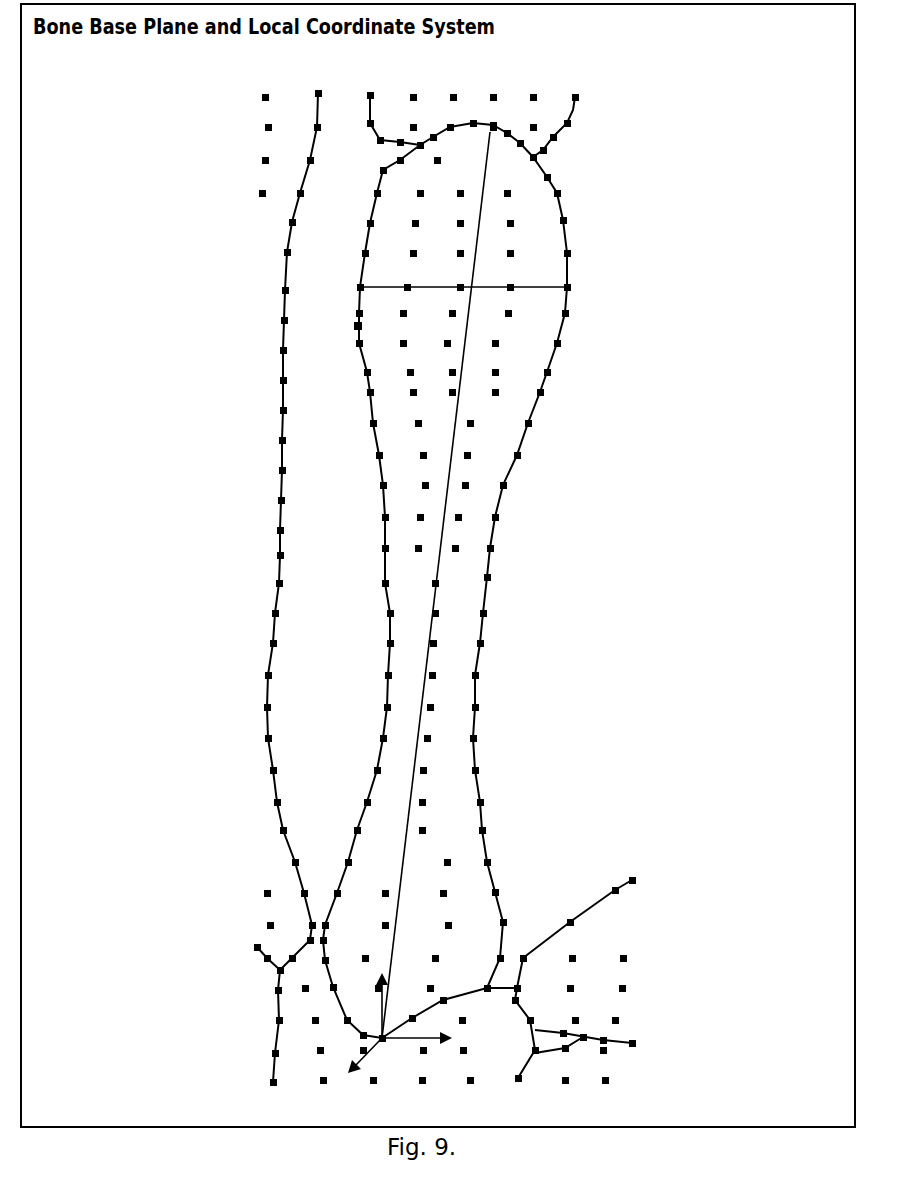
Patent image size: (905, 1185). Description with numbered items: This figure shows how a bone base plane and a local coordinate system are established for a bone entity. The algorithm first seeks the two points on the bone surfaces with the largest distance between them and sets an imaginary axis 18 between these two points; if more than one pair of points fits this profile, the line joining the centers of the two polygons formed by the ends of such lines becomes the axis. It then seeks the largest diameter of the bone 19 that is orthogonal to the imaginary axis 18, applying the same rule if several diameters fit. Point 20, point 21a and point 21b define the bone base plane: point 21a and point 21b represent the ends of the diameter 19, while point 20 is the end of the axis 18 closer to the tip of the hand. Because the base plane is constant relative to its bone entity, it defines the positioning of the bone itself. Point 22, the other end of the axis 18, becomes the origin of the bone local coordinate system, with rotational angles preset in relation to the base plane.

The imaginary axis 18 is at (467, 252).
The largest diameter of the bone 19 is at (428, 305).
The point 20 is at (490, 132).
The point 21a is at (357, 326).
The point 21b is at (567, 287).
The point 22 is at (382, 1038).